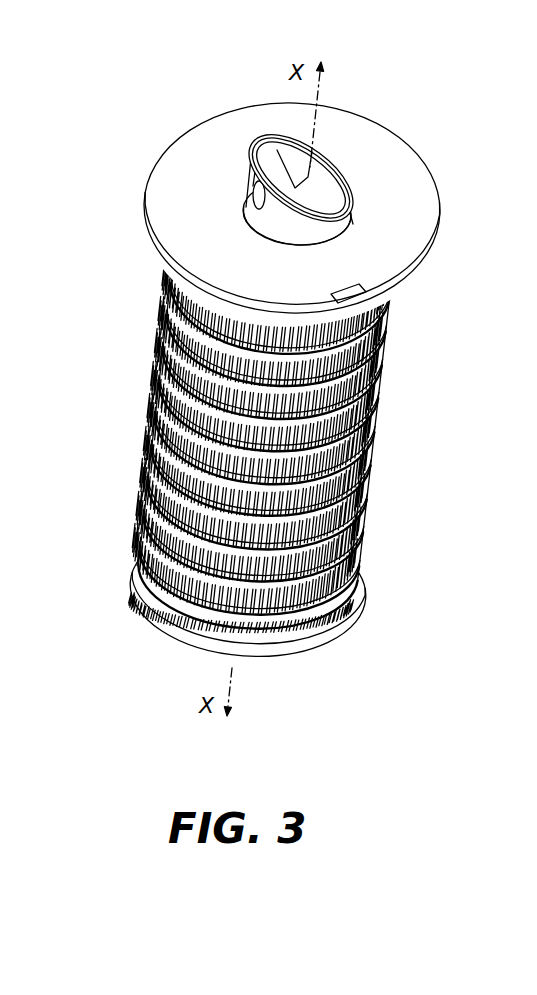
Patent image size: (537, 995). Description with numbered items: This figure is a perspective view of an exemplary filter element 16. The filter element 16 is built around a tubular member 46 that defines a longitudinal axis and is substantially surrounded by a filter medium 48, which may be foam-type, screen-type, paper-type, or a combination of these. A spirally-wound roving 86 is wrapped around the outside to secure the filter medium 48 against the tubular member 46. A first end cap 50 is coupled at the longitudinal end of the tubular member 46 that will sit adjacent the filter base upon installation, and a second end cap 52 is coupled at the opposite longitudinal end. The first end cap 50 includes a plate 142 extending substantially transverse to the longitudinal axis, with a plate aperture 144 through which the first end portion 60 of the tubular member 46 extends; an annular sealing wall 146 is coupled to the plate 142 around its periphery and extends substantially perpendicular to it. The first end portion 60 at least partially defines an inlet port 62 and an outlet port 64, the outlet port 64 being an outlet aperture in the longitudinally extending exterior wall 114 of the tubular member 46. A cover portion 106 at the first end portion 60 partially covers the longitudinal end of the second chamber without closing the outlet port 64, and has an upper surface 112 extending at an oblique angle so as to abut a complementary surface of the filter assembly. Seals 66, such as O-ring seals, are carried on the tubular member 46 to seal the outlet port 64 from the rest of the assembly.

The filter element 16 is at (283, 380).
The tubular member 46 is at (283, 191).
The filter medium 48 is at (291, 447).
The first end cap 50 is at (329, 214).
The second end cap 52 is at (312, 647).
The first end portion 60 is at (261, 182).
The inlet port 62 is at (328, 188).
The outlet port 64 is at (230, 232).
The seal 66 is at (257, 203).
The spirally-wound roving 86 is at (387, 357).
The cover portion 106 is at (236, 163).
The upper surface 112 is at (291, 173).
The exterior wall 114 is at (283, 230).
The plate 142 is at (397, 250).
The plate aperture 144 is at (354, 211).
The sealing wall 146 is at (410, 287).